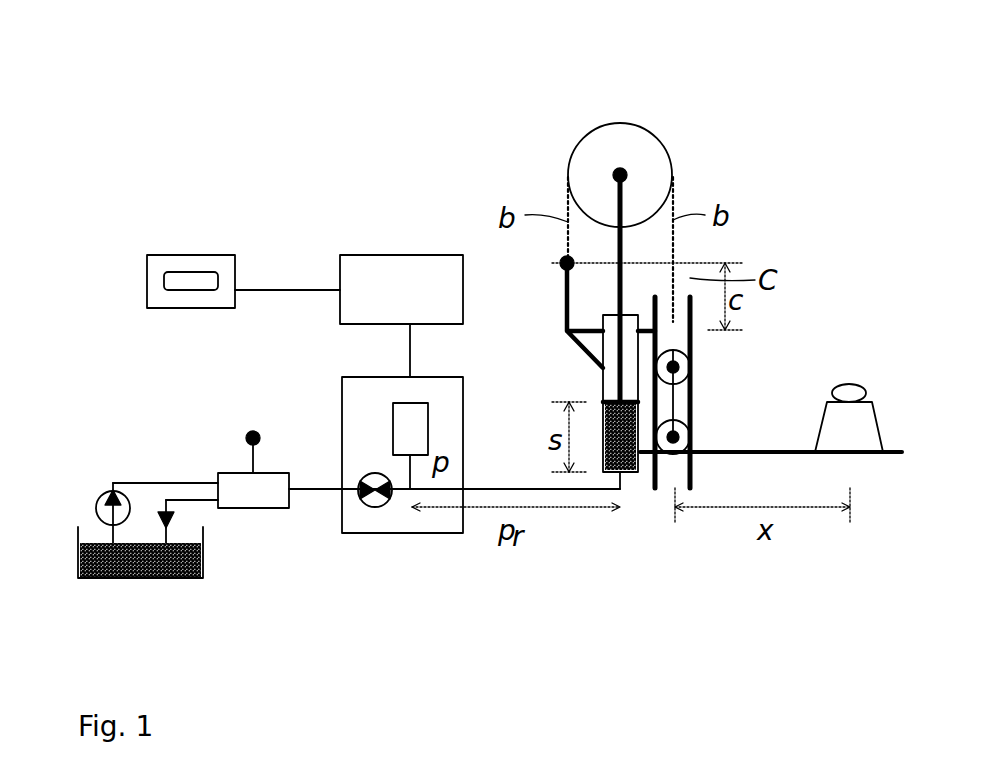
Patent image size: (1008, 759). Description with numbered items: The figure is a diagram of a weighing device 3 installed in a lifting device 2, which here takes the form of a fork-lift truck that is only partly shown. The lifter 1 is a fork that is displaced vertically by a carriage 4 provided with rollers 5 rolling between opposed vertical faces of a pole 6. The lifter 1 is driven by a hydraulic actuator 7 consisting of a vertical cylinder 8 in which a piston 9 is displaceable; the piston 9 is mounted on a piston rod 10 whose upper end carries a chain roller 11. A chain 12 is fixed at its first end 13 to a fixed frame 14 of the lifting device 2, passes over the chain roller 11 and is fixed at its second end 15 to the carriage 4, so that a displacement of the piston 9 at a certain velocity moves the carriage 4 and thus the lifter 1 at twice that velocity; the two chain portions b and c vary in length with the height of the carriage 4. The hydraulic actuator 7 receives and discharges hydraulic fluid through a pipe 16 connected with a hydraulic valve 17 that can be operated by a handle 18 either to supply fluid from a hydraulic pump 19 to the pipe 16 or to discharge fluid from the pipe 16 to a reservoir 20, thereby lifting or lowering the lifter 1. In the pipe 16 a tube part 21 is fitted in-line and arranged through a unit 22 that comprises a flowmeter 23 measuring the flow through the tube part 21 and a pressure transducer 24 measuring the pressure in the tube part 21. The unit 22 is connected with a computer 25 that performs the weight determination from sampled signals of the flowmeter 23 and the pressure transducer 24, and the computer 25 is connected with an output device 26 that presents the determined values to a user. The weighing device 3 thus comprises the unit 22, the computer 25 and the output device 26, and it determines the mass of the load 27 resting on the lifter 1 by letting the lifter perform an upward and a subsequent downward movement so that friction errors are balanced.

The lifter 1 is at (890, 455).
The lifting device 2 is at (477, 161).
The weighing device 3 is at (176, 396).
The carriage 4 is at (655, 325).
The rollers 5 is at (690, 365).
The pole 6 is at (690, 405).
The hydraulic actuator 7 is at (603, 368).
The cylinder 8 is at (625, 472).
The piston 9 is at (603, 395).
The piston rod 10 is at (622, 248).
The chain roller 11 is at (613, 140).
The chain 12 is at (673, 195).
The first end 13 is at (560, 262).
The fixed frame 14 is at (565, 298).
The second end 15 is at (690, 330).
The pipe 16 is at (313, 492).
The hydraulic valve 17 is at (238, 500).
The handle 18 is at (250, 428).
The hydraulic pump 19 is at (98, 505).
The reservoir 20 is at (95, 565).
The tube part 21 is at (443, 500).
The unit 22 is at (342, 412).
The flowmeter 23 is at (380, 507).
The pressure transducer 24 is at (418, 430).
The computer 25 is at (410, 307).
The output device 26 is at (157, 255).
The load 27 is at (870, 400).